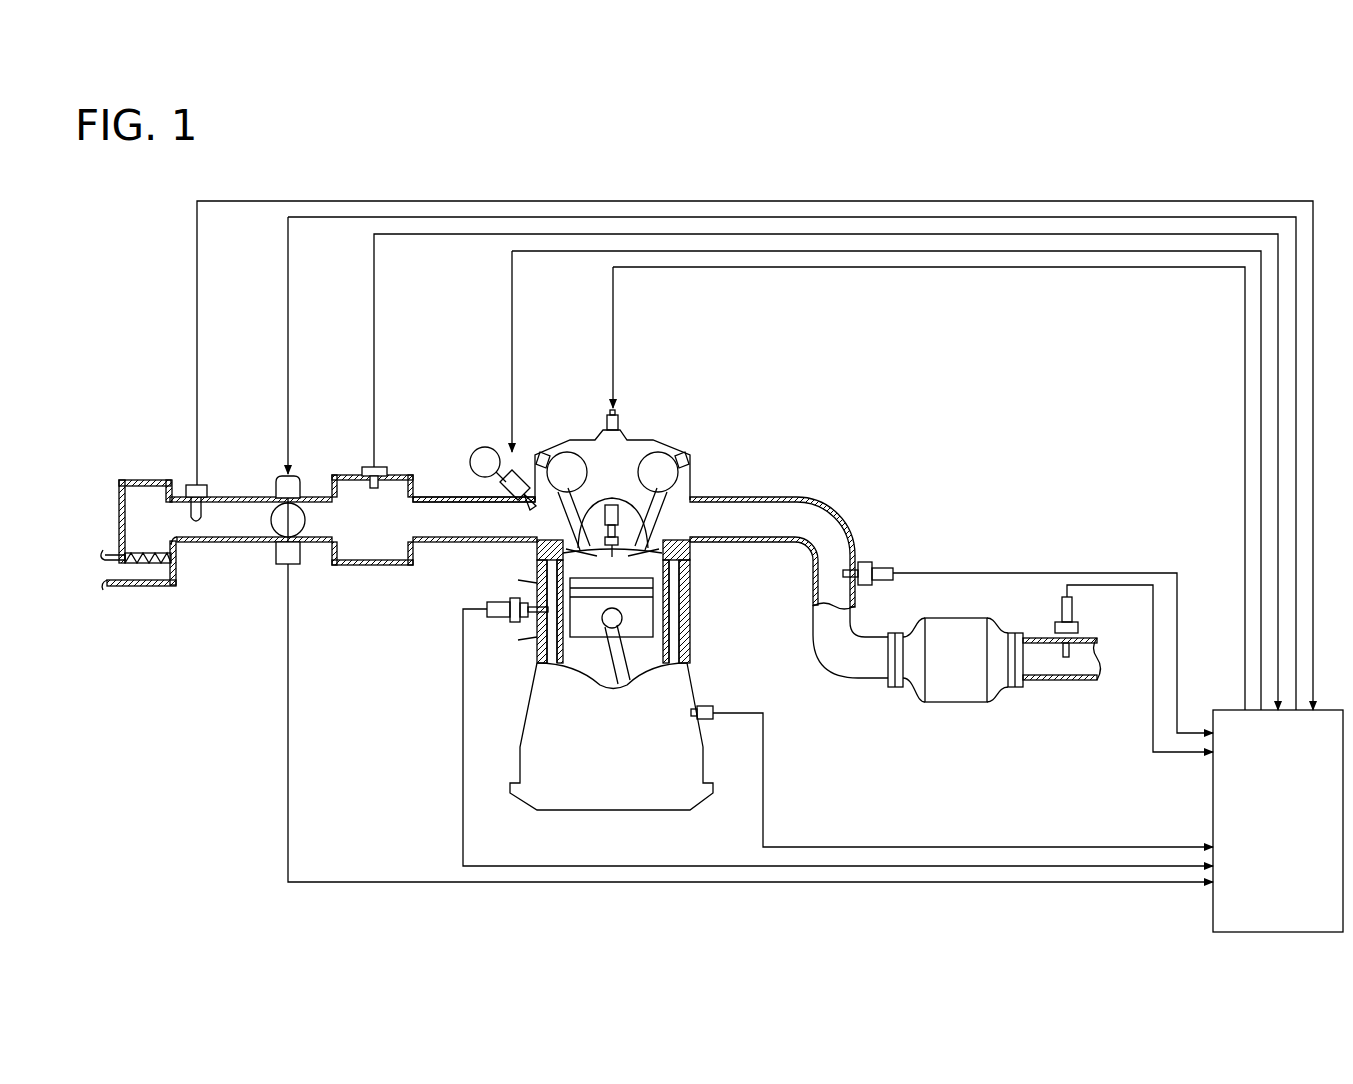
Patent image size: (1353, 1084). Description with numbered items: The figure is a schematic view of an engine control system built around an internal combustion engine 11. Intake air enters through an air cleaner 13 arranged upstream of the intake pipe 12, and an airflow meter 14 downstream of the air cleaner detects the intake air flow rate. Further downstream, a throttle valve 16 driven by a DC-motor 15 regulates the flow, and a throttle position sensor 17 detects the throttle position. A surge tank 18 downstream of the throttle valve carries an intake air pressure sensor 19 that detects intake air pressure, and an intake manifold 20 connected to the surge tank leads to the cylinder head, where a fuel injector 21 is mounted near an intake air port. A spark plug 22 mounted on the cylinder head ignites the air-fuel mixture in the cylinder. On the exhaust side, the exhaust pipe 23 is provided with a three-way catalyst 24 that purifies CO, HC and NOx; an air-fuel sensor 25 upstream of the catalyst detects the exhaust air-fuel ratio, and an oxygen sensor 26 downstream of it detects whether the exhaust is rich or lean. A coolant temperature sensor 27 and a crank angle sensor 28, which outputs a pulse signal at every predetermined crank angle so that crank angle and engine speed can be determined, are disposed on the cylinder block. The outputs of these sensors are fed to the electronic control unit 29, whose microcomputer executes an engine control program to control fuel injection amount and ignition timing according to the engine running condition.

The internal combustion engine 11 is at (658, 442).
The intake pipe 12 is at (232, 496).
The air cleaner 13 is at (145, 563).
The airflow meter 14 is at (190, 485).
The DC-motor 15 is at (270, 476).
The throttle valve 16 is at (272, 522).
The throttle opening sensor 17 is at (280, 566).
The surge tank 18 is at (380, 567).
The intake air pressure sensor 19 is at (380, 466).
The intake manifold 20 is at (443, 497).
The fuel injector 21 is at (465, 485).
The spark plug 22 is at (630, 485).
The exhaust pipe 23 is at (797, 499).
The three-way catalyst 24 is at (953, 620).
The air-fuel sensor 25 is at (867, 558).
The oxygen sensor 26 is at (1080, 610).
The coolant temperature sensor 27 is at (515, 622).
The crank angle sensor 28 is at (710, 700).
The electronic control unit 29 is at (1213, 908).